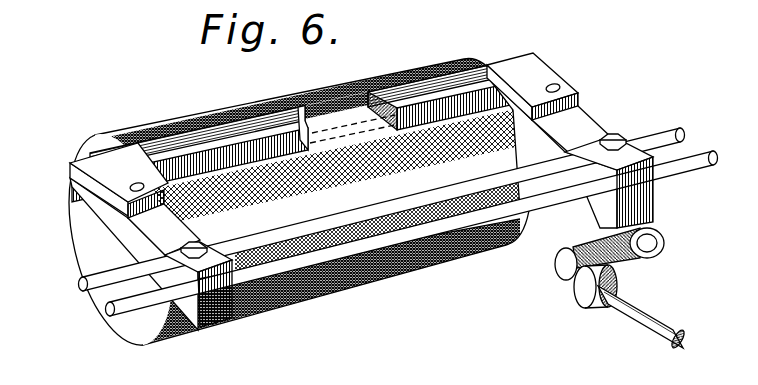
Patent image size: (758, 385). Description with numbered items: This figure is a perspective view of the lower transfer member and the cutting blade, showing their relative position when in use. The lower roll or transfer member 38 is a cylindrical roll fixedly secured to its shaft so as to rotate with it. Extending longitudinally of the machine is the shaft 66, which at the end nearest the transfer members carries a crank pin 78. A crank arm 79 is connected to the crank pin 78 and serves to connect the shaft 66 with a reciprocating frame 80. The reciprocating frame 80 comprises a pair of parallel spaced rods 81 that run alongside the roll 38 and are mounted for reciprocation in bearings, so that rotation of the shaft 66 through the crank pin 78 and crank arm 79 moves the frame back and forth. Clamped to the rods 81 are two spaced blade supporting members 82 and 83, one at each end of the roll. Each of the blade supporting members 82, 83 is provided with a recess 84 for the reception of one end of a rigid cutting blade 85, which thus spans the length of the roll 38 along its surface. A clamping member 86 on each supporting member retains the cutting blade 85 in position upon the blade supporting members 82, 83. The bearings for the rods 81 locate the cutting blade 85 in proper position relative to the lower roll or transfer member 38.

The roll or transfer member 38 is at (258, 112).
The shaft 66 is at (634, 327).
The crank pin 78 is at (570, 278).
The crank arm 79 is at (617, 266).
The reciprocating frame 80 is at (662, 207).
The parallel spaced rods 81 is at (104, 309).
The blade supporting member 82 is at (580, 117).
The blade supporting member 83 is at (148, 224).
The recess 84 is at (118, 192).
The rigid cutting blade 85 is at (147, 158).
The clamping member 86 is at (78, 161).